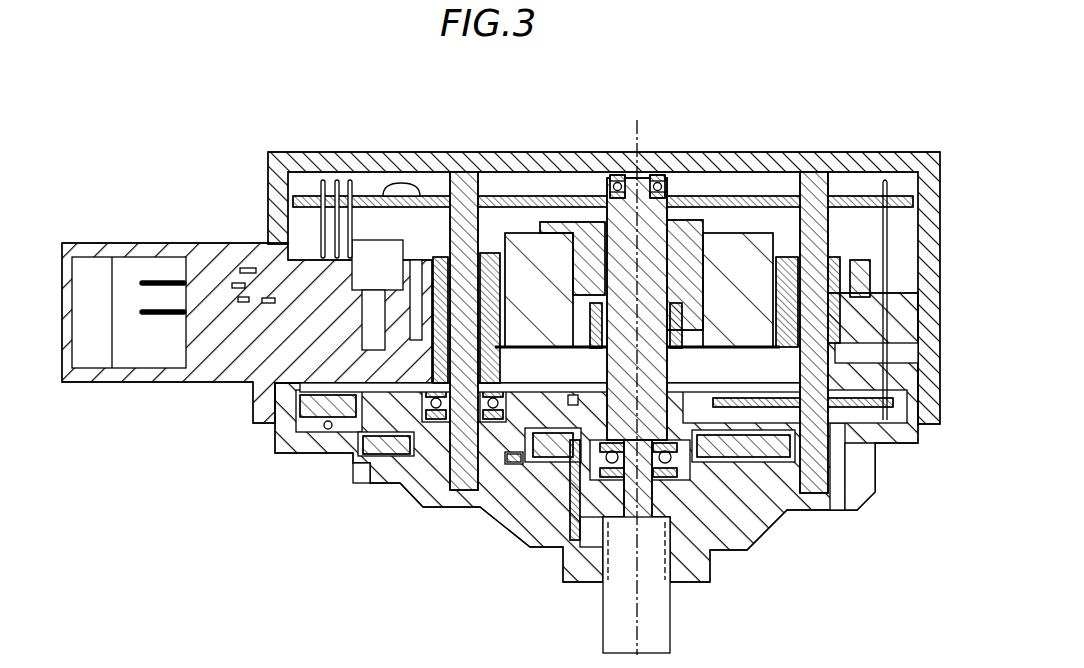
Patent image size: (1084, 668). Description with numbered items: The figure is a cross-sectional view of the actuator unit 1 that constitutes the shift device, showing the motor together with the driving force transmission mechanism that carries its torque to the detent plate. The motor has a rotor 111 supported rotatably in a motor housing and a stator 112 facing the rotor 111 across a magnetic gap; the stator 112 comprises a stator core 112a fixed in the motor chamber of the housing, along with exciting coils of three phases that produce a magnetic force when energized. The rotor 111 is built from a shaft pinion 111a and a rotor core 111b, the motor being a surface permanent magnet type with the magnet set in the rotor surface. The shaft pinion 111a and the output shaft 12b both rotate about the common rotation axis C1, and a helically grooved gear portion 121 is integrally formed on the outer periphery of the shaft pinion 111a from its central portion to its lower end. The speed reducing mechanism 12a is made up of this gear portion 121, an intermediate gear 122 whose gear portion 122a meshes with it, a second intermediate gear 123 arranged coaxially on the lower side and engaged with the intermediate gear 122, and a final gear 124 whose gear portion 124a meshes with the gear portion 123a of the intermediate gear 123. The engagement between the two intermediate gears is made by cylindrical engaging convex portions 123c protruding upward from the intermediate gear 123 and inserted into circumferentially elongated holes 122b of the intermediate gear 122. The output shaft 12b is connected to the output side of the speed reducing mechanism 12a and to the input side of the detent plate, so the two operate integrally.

The motor 1 is at (214, 112).
The speed reducing mechanism 12a is at (537, 620).
The output shaft 12b is at (665, 632).
The rotor 111 is at (558, 212).
The shaft pinion 111a is at (578, 210).
The rotor core 111b is at (693, 228).
The stator 112 is at (486, 246).
The stator core 112a is at (446, 262).
The gear portion 121 is at (667, 190).
The intermediate gear 122 is at (320, 422).
The gear portion 122a is at (560, 462).
The elongated holes 122b is at (345, 455).
The intermediate gear 123 is at (422, 456).
The gear portion 123a is at (514, 462).
The engaging convex portions 123c is at (358, 472).
The final gear 124 is at (545, 458).
The gear portion 124a is at (403, 456).
The rotation axis C1 is at (631, 590).